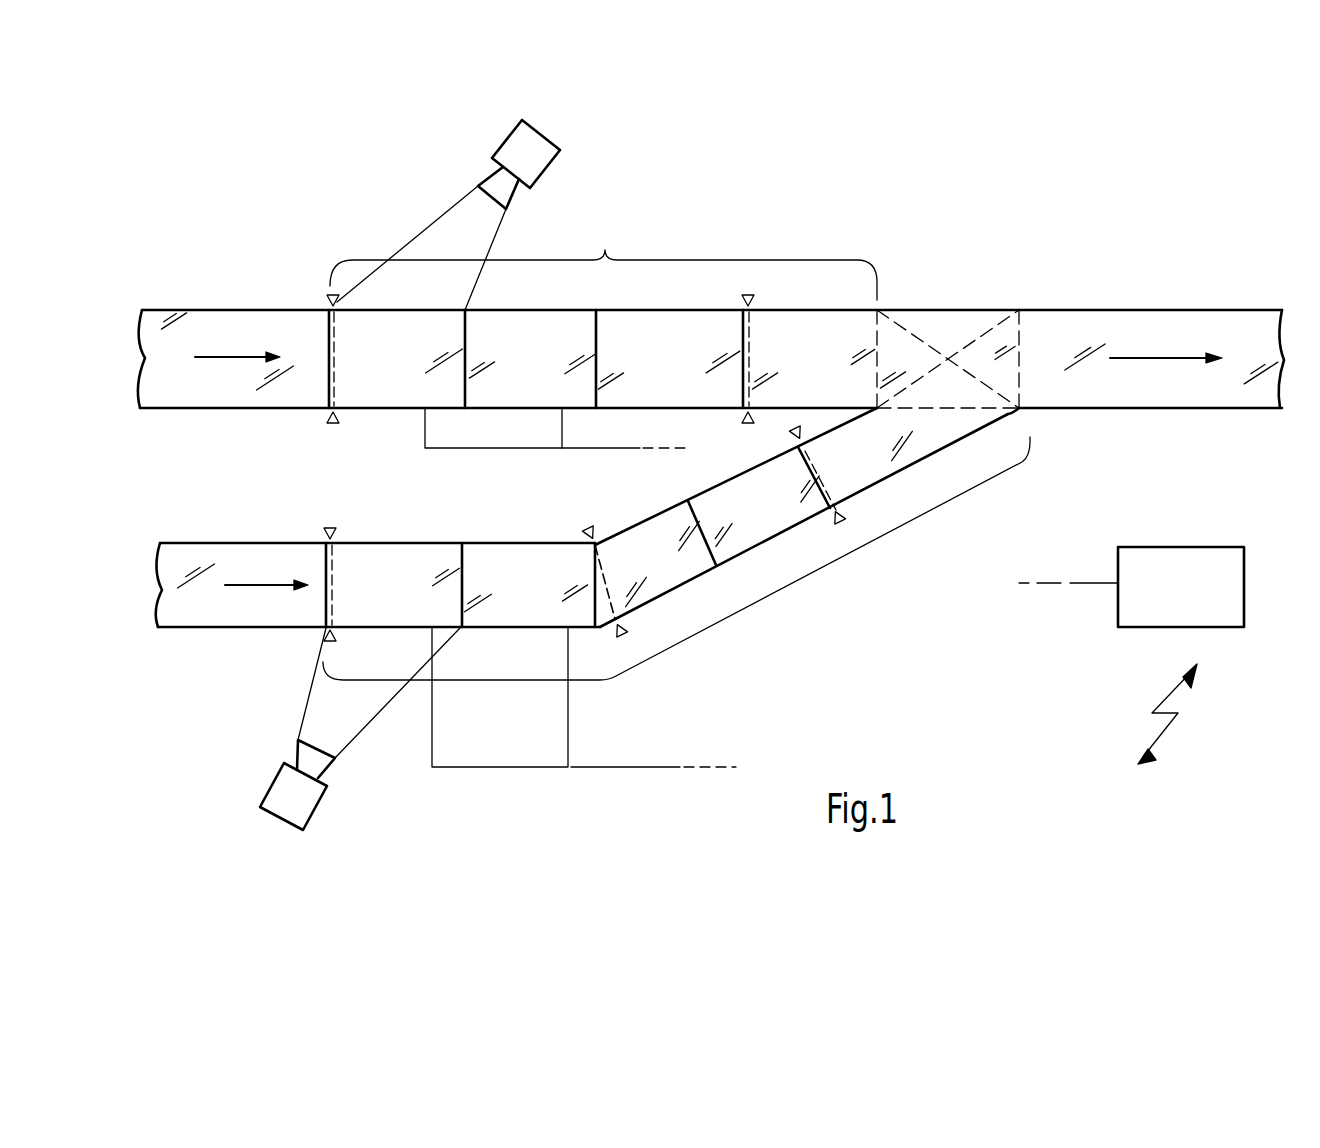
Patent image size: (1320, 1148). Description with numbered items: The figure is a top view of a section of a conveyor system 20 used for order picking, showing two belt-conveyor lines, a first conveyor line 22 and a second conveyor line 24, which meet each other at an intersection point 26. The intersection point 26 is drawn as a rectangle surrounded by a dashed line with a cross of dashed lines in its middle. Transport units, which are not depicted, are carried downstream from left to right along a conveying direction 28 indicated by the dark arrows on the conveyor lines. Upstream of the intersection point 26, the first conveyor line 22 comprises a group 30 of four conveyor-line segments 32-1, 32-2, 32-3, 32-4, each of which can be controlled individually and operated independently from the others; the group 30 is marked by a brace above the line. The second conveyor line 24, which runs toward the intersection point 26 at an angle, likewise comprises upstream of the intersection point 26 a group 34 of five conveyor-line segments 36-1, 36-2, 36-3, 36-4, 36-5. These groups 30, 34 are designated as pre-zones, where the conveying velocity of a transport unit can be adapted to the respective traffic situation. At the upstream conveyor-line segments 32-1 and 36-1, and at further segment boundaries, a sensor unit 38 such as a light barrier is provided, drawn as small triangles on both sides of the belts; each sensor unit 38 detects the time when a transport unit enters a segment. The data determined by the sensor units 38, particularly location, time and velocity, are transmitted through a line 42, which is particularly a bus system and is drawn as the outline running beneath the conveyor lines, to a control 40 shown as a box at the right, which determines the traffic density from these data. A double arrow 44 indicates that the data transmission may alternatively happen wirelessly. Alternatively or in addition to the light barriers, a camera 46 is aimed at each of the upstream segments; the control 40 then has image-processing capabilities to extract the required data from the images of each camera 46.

The conveyor system 20 is at (900, 565).
The first conveyor line 22 is at (118, 315).
The second conveyor line 24 is at (146, 600).
The intersection point 26 is at (955, 310).
The conveying direction 28 is at (1153, 358).
The group of conveyor-line segments 30 is at (603, 262).
The conveyor-line segment 32-1 is at (393, 342).
The conveyor-line segment 32-2 is at (527, 342).
The conveyor-line segment 32-3 is at (657, 342).
The conveyor-line segment 32-4 is at (804, 342).
The group of conveyor-line segments 34 is at (807, 524).
The conveyor-line segment 36-1 is at (390, 575).
The conveyor-line segment 36-2 is at (524, 575).
The conveyor-line segment 36-3 is at (623, 570).
The conveyor-line segment 36-4 is at (716, 518).
The conveyor-line segment 36-5 is at (829, 463).
The sensor unit 38 is at (336, 426).
The control 40 is at (1204, 597).
The line 42 is at (490, 449).
The double arrow 44 is at (1180, 725).
The camera 46 is at (495, 141).